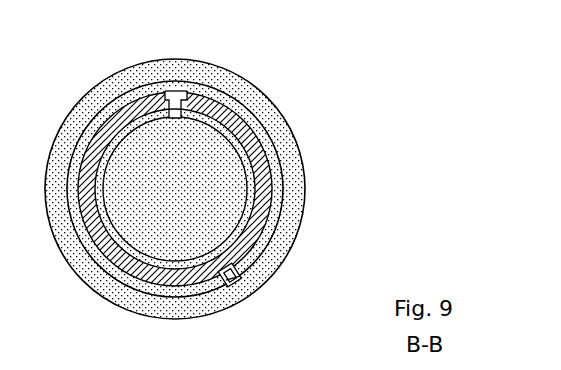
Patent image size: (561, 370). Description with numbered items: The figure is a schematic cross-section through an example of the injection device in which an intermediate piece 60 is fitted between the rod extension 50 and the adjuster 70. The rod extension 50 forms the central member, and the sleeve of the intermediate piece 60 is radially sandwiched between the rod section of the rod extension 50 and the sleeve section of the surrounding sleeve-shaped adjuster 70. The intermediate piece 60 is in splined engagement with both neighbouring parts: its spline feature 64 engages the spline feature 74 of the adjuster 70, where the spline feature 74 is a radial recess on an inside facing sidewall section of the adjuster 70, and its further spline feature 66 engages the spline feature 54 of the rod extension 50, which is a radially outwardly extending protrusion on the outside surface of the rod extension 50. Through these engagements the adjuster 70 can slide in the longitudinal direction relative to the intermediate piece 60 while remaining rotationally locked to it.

The rod extension 50 is at (244, 184).
The spline feature 54 is at (190, 98).
The intermediate piece 60 is at (275, 147).
The spline feature 64 is at (236, 285).
The further spline feature 66 is at (177, 95).
The adjuster 70 is at (297, 218).
The spline feature 74 is at (240, 278).